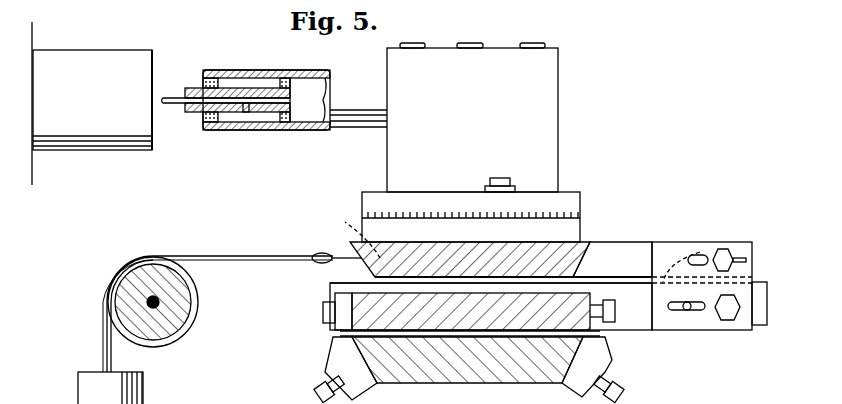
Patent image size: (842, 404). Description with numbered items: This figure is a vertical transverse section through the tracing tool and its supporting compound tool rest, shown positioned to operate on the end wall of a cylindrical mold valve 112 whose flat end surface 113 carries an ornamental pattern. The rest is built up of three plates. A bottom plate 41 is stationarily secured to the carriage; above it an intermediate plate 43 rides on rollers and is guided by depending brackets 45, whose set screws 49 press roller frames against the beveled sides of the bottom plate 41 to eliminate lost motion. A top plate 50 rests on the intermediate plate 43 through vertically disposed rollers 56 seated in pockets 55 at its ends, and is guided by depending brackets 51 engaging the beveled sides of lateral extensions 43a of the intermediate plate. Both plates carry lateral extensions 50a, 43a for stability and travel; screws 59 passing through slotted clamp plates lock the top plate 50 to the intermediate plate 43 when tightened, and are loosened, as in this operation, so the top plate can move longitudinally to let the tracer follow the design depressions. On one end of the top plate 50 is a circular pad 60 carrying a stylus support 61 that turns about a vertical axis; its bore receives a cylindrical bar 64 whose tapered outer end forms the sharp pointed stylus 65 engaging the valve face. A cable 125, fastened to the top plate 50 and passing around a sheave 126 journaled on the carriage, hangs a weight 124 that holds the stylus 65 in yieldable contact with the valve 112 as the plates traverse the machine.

The mold valve 112 is at (92, 56).
The flat end surface 113 is at (153, 52).
The stylus 65 is at (173, 96).
The cylindrical bar 64 is at (292, 130).
The stylus support 61 is at (545, 158).
The circular pad 60 is at (578, 229).
The top plate 50 is at (585, 262).
The lateral extension of top plate 50a is at (638, 250).
The depending bracket 51 is at (658, 265).
The pocket 55 is at (690, 252).
The roller 56 is at (706, 257).
The screw 59 is at (746, 260).
The intermediate plate 43 is at (325, 325).
The lateral extension of intermediate plate 43a is at (762, 326).
The bottom plate 41 is at (482, 377).
The bracket 45 is at (340, 357).
The set screw 49 is at (320, 392).
The cable 125 is at (120, 268).
The sheave 126 is at (185, 304).
The weight 124 is at (143, 397).